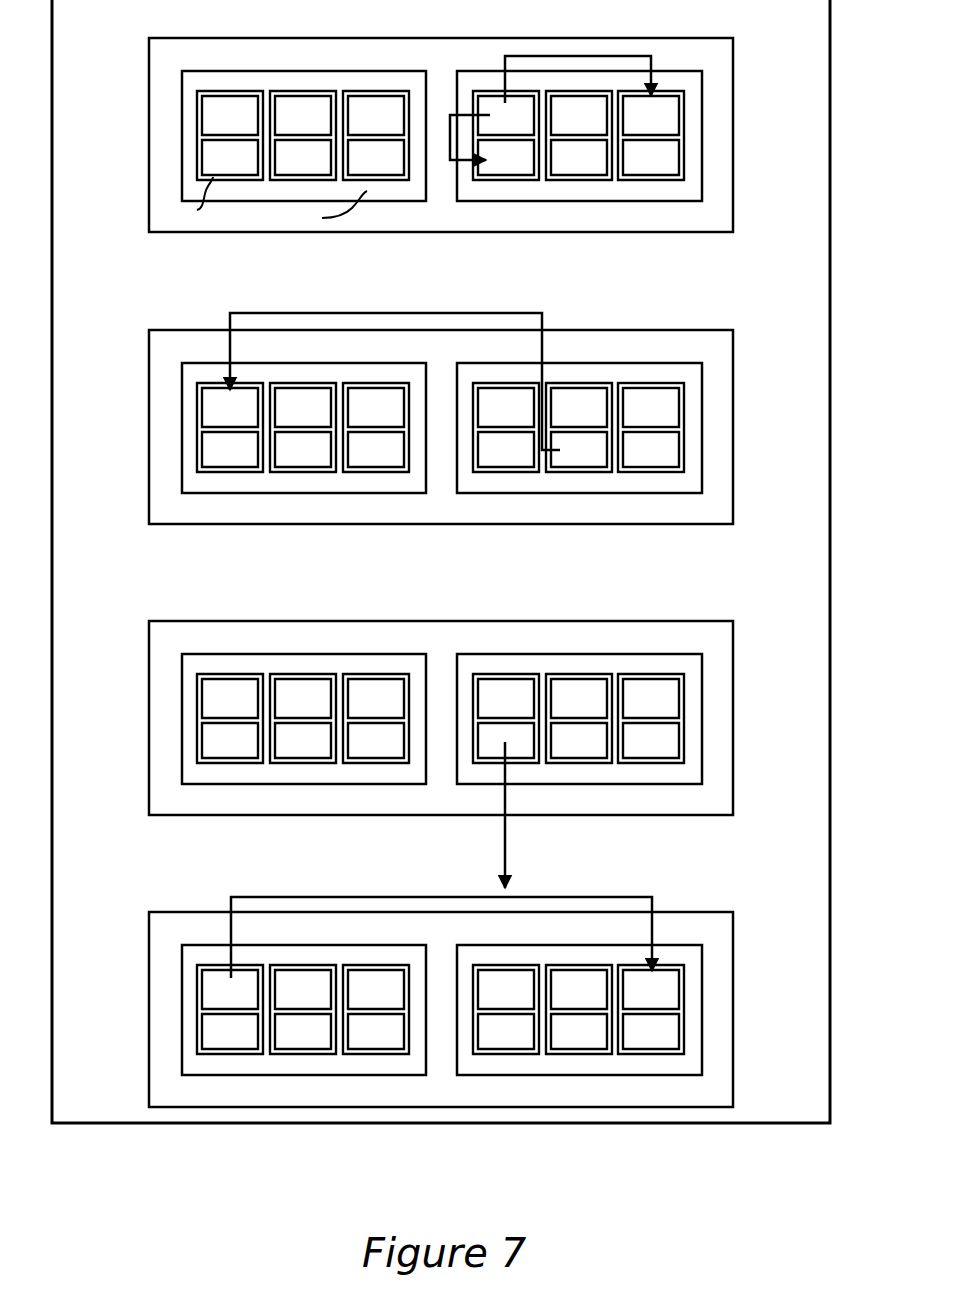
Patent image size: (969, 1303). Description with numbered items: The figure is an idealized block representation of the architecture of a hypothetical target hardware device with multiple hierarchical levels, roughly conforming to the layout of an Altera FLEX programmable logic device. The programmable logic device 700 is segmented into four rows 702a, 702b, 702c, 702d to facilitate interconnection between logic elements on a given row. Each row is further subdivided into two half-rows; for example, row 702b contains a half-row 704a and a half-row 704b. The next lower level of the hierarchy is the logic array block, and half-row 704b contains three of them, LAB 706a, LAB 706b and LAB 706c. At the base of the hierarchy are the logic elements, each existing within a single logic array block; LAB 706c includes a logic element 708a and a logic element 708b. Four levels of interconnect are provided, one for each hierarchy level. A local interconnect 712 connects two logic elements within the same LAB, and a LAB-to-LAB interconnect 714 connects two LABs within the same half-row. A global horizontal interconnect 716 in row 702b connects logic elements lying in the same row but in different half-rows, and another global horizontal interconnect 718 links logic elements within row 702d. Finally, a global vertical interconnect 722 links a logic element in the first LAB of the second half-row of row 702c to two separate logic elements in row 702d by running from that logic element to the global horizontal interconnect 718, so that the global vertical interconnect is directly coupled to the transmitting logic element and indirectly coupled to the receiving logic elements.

The programmable logic device 700 is at (638, 1125).
The row 702a is at (720, 103).
The row 702b is at (483, 431).
The row 702c is at (715, 663).
The row 702d is at (715, 979).
The half-row 704a is at (288, 487).
The half-row 704b is at (568, 431).
The logic array block 706a is at (500, 473).
The logic array block 706b is at (583, 473).
The logic array block 706c is at (686, 431).
The logic element 708a is at (647, 395).
The logic element 708b is at (672, 453).
The local interconnect 712 is at (450, 148).
The LAB-to-LAB interconnect 714 is at (529, 54).
The global horizontal interconnect 716 is at (285, 313).
The global horizontal interconnect 718 is at (653, 907).
The global vertical interconnect 722 is at (508, 873).